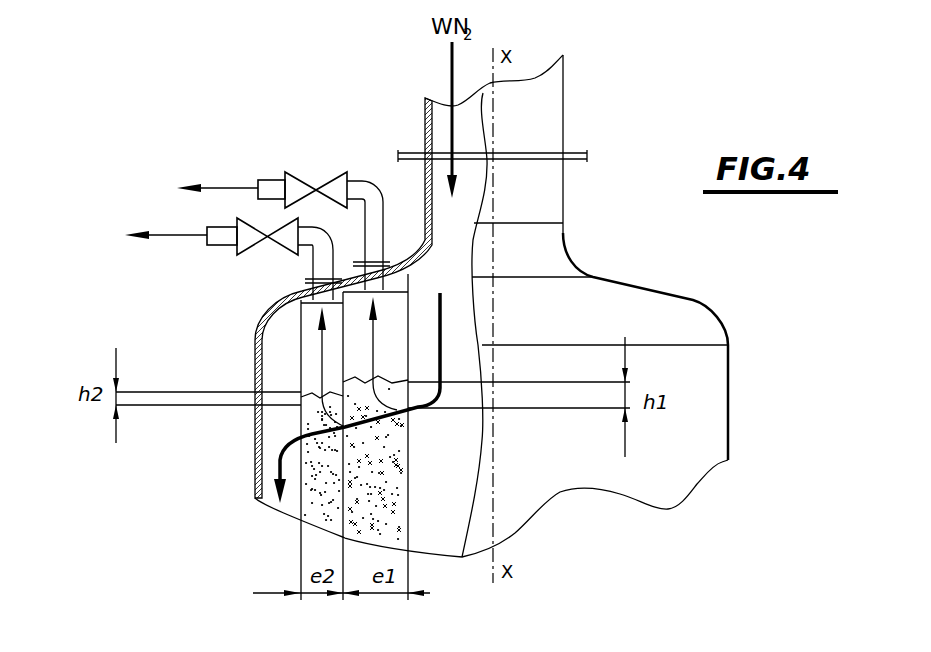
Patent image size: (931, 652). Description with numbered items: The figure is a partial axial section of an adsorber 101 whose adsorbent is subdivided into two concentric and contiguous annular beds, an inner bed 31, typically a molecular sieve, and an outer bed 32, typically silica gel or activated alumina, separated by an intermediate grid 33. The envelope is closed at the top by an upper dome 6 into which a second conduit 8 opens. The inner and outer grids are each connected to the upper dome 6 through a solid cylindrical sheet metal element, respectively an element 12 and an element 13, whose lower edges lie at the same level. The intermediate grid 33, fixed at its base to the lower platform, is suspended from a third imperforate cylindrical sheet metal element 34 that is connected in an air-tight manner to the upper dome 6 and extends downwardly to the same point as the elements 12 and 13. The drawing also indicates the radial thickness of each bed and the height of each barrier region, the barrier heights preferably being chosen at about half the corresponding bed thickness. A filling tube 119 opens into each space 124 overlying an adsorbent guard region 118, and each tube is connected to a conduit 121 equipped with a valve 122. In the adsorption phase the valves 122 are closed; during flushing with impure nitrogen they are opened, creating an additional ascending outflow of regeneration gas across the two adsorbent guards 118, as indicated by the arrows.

The second conduit 8 is at (565, 192).
The upper dome 6 is at (647, 288).
The adsorber 101 is at (735, 400).
The solid cylindrical sheet metal element 12 is at (408, 352).
The third imperforate cylindrical sheet metal element 34 is at (343, 337).
The solid cylindrical sheet metal element 13 is at (301, 373).
The space 124 is at (362, 348).
The adsorbent guard region 118 is at (258, 409).
The filling tube 119 is at (345, 288).
The conduit 121 is at (322, 262).
The valve 122 is at (245, 222).
The outer annular bed 32 is at (327, 510).
The intermediate grid 33 is at (345, 445).
The inner annular bed 31 is at (407, 503).